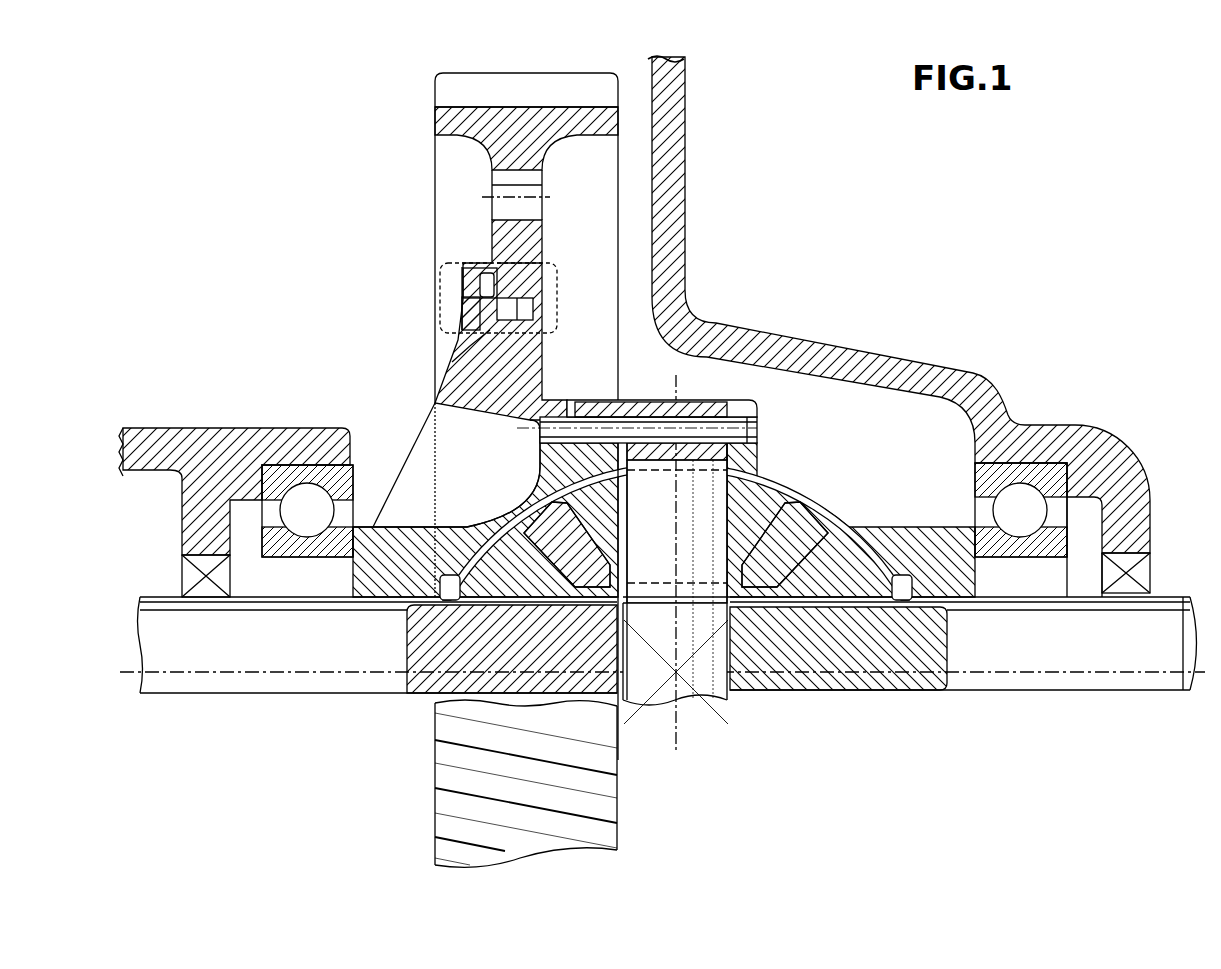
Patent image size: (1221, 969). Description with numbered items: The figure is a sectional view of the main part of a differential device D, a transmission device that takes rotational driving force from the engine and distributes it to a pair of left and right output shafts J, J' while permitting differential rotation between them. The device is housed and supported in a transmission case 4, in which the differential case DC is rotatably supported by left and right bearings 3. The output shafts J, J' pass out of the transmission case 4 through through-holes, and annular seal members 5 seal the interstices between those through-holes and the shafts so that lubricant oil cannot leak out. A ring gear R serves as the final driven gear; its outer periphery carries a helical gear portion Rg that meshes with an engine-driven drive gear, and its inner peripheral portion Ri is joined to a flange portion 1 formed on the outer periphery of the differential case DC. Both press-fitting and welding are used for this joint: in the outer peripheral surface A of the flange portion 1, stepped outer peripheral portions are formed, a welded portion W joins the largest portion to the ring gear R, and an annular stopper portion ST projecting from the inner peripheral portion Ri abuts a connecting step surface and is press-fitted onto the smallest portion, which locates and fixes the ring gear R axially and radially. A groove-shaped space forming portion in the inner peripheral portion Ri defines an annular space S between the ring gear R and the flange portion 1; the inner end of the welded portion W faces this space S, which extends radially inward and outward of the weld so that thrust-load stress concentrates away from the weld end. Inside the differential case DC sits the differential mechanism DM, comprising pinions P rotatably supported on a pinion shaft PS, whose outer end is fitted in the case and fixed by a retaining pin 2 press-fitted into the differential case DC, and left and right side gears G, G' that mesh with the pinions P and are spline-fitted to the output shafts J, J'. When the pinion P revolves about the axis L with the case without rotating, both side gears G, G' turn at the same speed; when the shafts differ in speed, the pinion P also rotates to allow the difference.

The flange portion 1 is at (462, 318).
The retaining pin 2 is at (430, 291).
The bearing 3 is at (302, 500).
The transmission case 4 is at (860, 347).
The seal member 5 is at (195, 577).
The ring gear R is at (430, 117).
The helical gear portion Rg is at (515, 90).
The inner peripheral portion Ri is at (462, 350).
The differential device D is at (330, 227).
The space S is at (482, 268).
The welded portion W is at (470, 287).
The outer peripheral surface A is at (543, 262).
The stopper portion ST is at (535, 305).
The differential case DC is at (507, 490).
The side gear G is at (529, 537).
The side gear G' is at (835, 534).
The pinion P is at (755, 495).
The pinion shaft PS is at (703, 400).
The differential mechanism DM is at (830, 500).
The output shaft J is at (378, 677).
The output shaft J' is at (963, 672).
The axis L is at (970, 673).